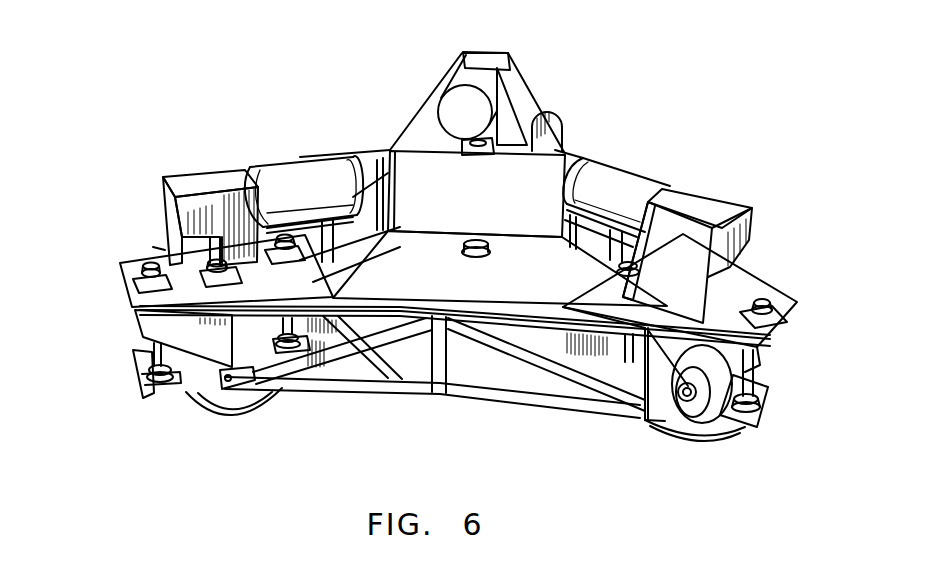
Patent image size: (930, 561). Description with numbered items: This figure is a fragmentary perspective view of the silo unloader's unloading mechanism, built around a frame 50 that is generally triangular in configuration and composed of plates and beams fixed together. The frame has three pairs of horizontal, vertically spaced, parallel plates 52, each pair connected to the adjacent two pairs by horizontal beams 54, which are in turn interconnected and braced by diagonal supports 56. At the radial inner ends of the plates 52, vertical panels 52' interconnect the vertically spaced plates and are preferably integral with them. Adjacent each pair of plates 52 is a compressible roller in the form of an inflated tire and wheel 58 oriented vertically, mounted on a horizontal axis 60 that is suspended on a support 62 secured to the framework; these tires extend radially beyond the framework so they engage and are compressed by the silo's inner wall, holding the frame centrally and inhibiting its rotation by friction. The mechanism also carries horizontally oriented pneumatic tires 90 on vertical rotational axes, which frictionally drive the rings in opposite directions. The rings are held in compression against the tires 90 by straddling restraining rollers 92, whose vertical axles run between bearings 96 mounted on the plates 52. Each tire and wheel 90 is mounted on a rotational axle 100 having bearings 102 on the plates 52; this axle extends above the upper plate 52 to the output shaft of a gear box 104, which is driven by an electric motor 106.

The frame 50 is at (378, 405).
The plates 52 is at (444, 278).
The vertical panels 52' is at (476, 194).
The horizontal beams 54 is at (409, 392).
The diagonal supports 56 is at (522, 370).
The tire and wheel 58 is at (158, 249).
The horizontal axis 60 is at (647, 418).
The support 62 is at (680, 389).
The pneumatic tires 90 is at (233, 408).
The restraining rollers 92 is at (753, 428).
The bearings 96 is at (133, 283).
The rotational axle 100 is at (211, 247).
The bearings 102 is at (290, 352).
The gear box 104 is at (207, 183).
The electric motor 106 is at (288, 173).